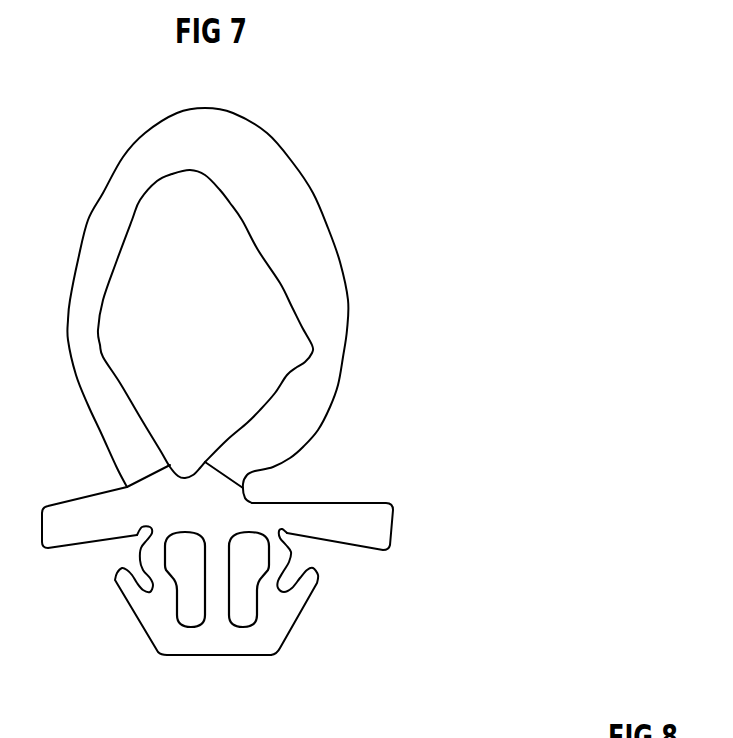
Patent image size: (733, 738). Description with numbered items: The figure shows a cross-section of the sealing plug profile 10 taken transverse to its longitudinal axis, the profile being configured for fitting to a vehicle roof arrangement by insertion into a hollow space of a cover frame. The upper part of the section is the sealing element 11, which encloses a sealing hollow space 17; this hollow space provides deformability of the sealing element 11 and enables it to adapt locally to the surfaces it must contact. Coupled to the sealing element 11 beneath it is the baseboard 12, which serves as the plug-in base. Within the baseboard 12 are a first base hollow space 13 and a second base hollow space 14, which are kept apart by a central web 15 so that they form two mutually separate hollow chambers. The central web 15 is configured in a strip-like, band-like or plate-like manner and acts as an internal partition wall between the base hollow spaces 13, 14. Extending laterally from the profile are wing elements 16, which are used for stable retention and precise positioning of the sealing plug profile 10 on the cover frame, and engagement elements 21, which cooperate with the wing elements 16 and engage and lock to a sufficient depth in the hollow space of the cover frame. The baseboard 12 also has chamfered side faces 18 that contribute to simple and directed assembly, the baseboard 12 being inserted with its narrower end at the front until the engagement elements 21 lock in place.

The sealing plug profile 10 is at (558, 200).
The sealing element 11 is at (115, 193).
The baseboard 12 is at (442, 537).
The first base hollow space 13 is at (243, 602).
The second base hollow space 14 is at (188, 606).
The central web 15 is at (216, 595).
The wing elements 16 is at (73, 508).
The sealing hollow space 17 is at (258, 306).
The chamfered side faces 18 is at (300, 627).
The engagement elements 21 is at (127, 585).